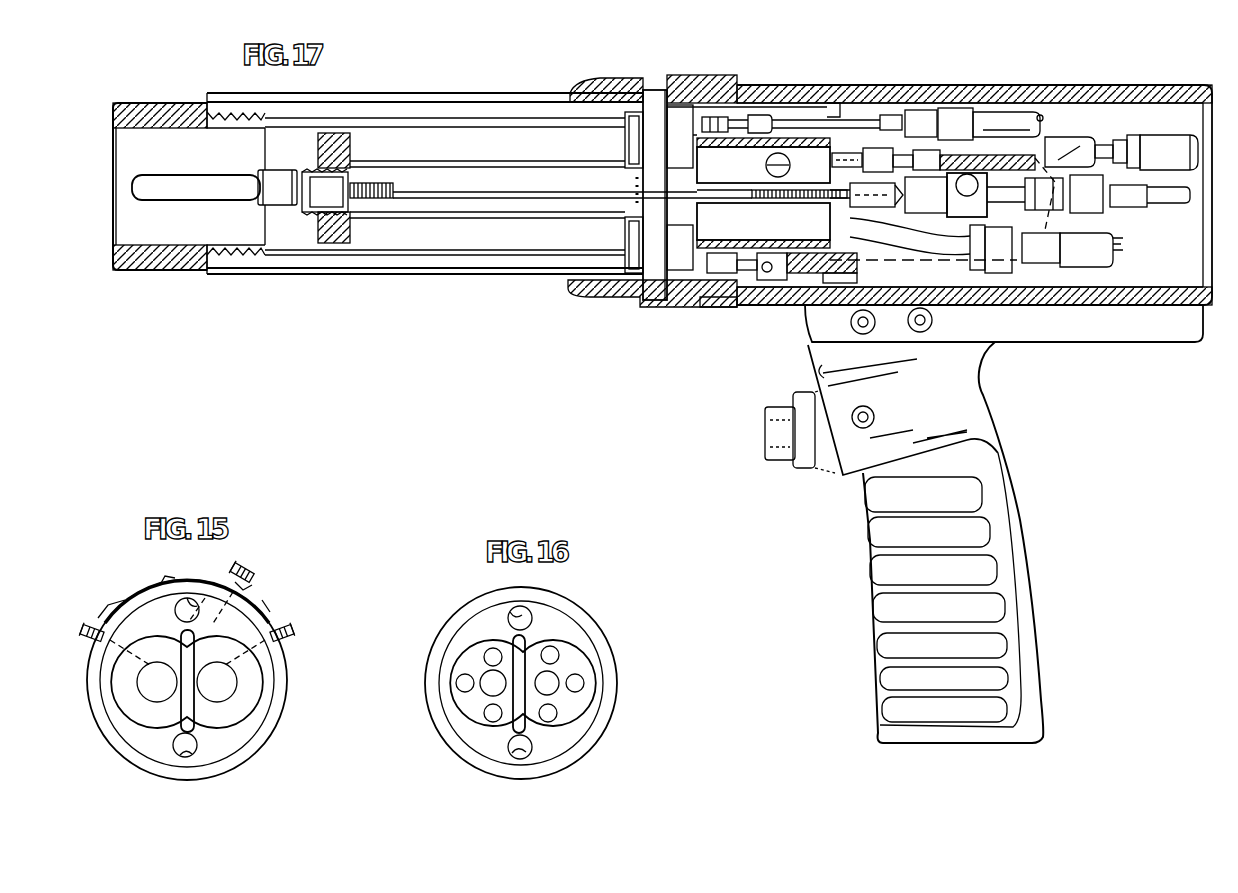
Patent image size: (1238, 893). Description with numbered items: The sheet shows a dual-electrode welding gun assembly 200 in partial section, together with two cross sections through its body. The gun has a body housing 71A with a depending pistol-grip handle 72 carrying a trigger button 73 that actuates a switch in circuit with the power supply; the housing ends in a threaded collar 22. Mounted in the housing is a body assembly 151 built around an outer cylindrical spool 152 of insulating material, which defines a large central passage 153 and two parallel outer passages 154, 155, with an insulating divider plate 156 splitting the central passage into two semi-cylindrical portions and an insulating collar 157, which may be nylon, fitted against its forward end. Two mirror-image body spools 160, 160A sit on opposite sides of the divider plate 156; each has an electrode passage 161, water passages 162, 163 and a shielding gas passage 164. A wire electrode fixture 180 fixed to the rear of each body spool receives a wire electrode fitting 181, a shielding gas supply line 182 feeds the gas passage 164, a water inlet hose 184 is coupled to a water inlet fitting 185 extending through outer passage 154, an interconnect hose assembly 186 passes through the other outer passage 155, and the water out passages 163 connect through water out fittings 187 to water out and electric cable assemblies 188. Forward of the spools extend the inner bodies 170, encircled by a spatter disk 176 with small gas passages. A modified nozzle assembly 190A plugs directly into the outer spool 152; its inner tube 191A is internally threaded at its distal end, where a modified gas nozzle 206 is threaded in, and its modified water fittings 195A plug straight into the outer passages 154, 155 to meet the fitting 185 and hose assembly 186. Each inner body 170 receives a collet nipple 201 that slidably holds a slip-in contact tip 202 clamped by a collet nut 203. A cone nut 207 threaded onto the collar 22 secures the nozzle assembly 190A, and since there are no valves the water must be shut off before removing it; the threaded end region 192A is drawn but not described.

In FIG. 17, the threaded collar 22 is at (713, 310).
In FIG. 17, the body housing 71A is at (1123, 85).
In FIG. 17, the pistol-grip handle 72 is at (1025, 550).
In FIG. 17, the trigger button 73 is at (778, 440).
In FIG. 17, the body assembly 151 is at (833, 112).
In FIG. 15, the outer cylindrical spool 152 is at (157, 588).
In FIG. 16, the outer cylindrical spool 152 is at (603, 630).
In FIG. 15, the central passage 153 is at (147, 713).
In FIG. 17, the outer passage 154 is at (757, 117).
In FIG. 15, the outer passage 154 is at (202, 597).
In FIG. 16, the outer passage 154 is at (500, 615).
In FIG. 17, the outer passage 155 is at (757, 272).
In FIG. 15, the outer passage 155 is at (185, 757).
In FIG. 16, the outer passage 155 is at (520, 759).
In FIG. 16, the insulating divider plate 156 is at (513, 723).
In FIG. 17, the electrically insulating collar 157 is at (677, 100).
In FIG. 17, the body spool 160 is at (808, 160).
In FIG. 15, the body spool 160 is at (163, 727).
In FIG. 16, the body spool 160 is at (567, 710).
In FIG. 15, the body spool 160A is at (237, 727).
In FIG. 16, the body spool 160A is at (460, 705).
In FIG. 16, the electrode passage 161 is at (557, 680).
In FIG. 16, the water passage 162 is at (550, 647).
In FIG. 16, the water passage 163 is at (547, 720).
In FIG. 16, the shielding gas passage 164 is at (580, 687).
In FIG. 17, the inner body 170 is at (545, 225).
In FIG. 17, the spatter disk 176 is at (347, 150).
In FIG. 17, the wire electrode fixture 180 is at (953, 247).
In FIG. 17, the wire electrode fitting 181 is at (1185, 140).
In FIG. 17, the shielding gas supply line 182 is at (1153, 207).
In FIG. 17, the water inlet hose 184 is at (1020, 120).
In FIG. 17, the water inlet fitting 185 is at (868, 122).
In FIG. 17, the interconnect hose assembly 186 is at (805, 302).
In FIG. 17, the water out fitting 187 is at (985, 217).
In FIG. 17, the water out and electric cable assembly 188 is at (1083, 265).
In FIG. 17, the nozzle assembly 190A is at (520, 70).
In FIG. 17, the inner tube 191A is at (413, 258).
In FIG. 17, the threaded end 192A is at (242, 233).
In FIG. 17, the modified water fittings 195A is at (652, 103).
In FIG. 17, the welding gun assembly 200 is at (658, 50).
In FIG. 17, the collet nipple 201 is at (318, 193).
In FIG. 17, the slip-in contact tip 202 is at (182, 187).
In FIG. 17, the collet nut 203 is at (277, 177).
In FIG. 17, the gas nozzle 206 is at (135, 258).
In FIG. 17, the cone nut 207 is at (642, 308).